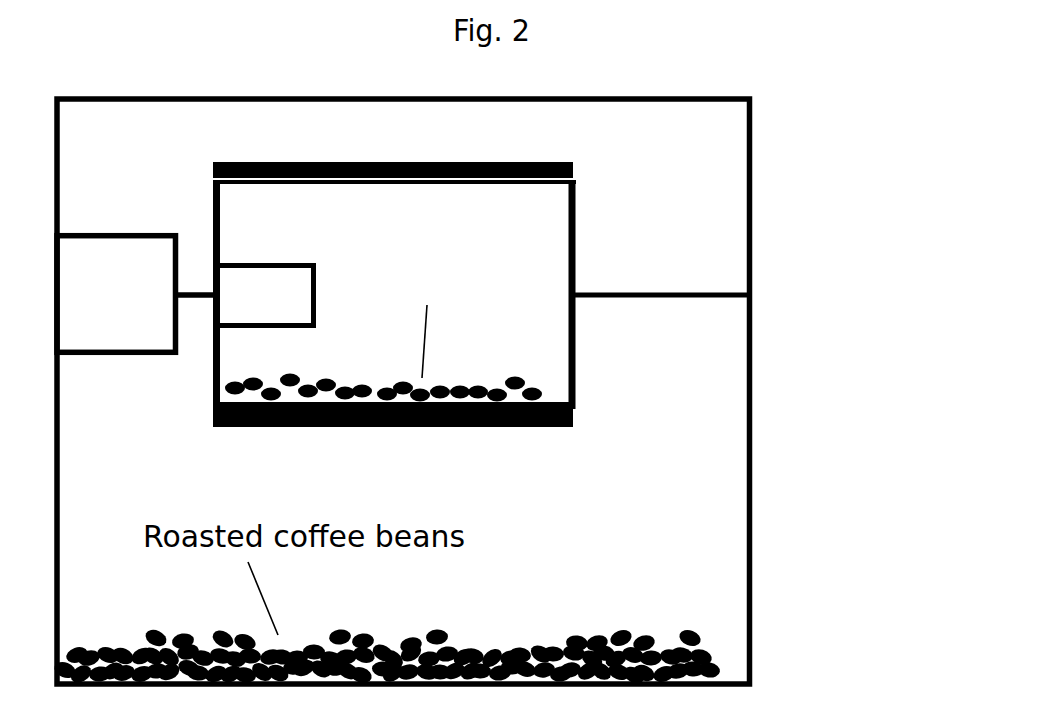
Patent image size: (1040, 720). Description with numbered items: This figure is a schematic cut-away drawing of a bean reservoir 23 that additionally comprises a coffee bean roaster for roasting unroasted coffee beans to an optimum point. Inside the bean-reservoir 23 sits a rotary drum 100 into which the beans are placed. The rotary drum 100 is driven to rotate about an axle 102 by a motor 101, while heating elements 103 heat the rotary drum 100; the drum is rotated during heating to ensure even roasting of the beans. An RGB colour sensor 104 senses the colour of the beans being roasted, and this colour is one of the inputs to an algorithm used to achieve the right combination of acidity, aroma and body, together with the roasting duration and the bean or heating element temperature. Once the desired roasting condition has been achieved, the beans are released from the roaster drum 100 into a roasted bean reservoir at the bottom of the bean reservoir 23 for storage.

The bean-reservoir 23 is at (771, 251).
The rotary drum 100 is at (575, 252).
The motor 101 is at (135, 294).
The axle 102 is at (662, 304).
The heating elements 103 is at (522, 437).
The RGB colour sensor 104 is at (265, 296).